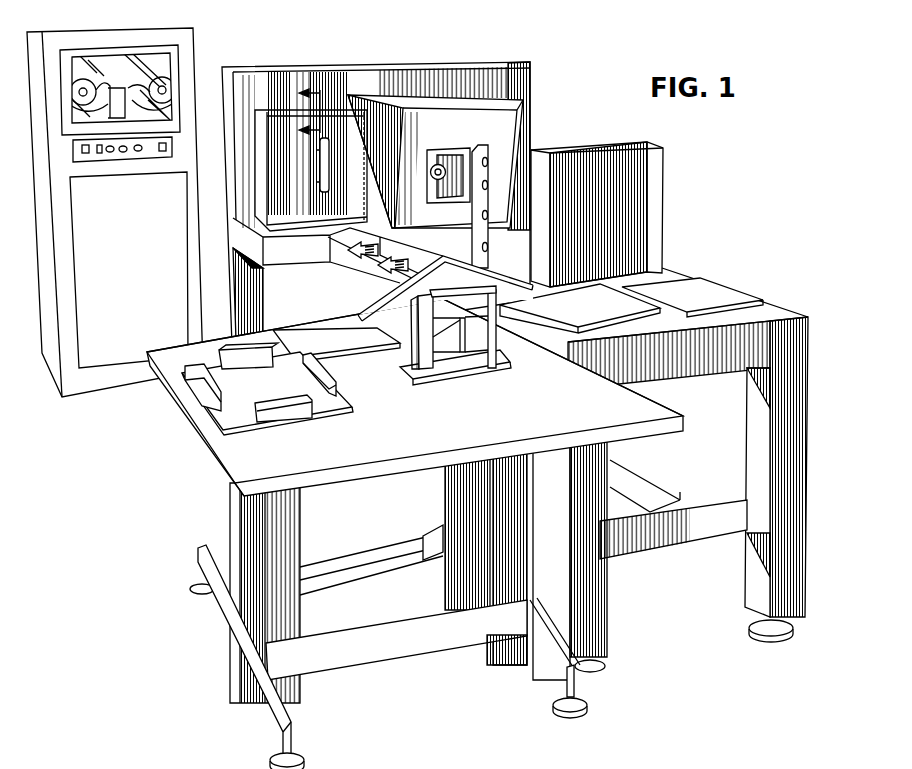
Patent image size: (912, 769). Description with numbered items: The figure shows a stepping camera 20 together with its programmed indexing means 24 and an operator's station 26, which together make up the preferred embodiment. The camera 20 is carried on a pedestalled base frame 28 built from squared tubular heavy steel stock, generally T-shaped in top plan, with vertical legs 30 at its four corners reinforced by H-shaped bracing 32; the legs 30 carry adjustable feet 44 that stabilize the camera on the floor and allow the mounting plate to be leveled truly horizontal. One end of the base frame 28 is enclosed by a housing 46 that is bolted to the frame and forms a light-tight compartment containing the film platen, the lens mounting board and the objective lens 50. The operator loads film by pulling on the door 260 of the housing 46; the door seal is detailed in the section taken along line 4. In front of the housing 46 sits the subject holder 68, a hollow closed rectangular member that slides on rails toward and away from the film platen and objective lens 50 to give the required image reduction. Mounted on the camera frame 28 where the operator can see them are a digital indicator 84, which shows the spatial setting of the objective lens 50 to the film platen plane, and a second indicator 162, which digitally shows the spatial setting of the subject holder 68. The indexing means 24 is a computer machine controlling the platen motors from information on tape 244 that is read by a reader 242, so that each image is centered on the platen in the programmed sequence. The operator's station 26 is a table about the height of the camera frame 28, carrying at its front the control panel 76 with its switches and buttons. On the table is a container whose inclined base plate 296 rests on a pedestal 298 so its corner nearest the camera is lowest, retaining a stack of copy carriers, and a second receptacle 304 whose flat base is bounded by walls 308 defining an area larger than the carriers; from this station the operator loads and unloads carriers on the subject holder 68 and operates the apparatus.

The stepping camera 20 is at (702, 221).
The indexing means 24 is at (192, 48).
The operator's station 26 is at (193, 450).
The base frame 28 is at (803, 332).
The vertical legs 30 is at (800, 472).
The H-shaped bracing 32 is at (643, 484).
The adjustable feet 44 is at (750, 631).
The housing 46 is at (531, 84).
The objective lens 50 is at (436, 166).
The subject holder 68 is at (657, 173).
The control panel 76 is at (333, 347).
The digital indicator 84 is at (348, 252).
The second indicator 162 is at (380, 268).
The reader 242 is at (117, 92).
The tape 244 is at (135, 88).
The door 260 is at (327, 118).
The inclined base plate 296 is at (512, 284).
The pedestal 298 is at (443, 367).
The second receptacle 304 is at (300, 427).
The walls 308 is at (310, 398).
The section line 4- 4 is at (301, 110).